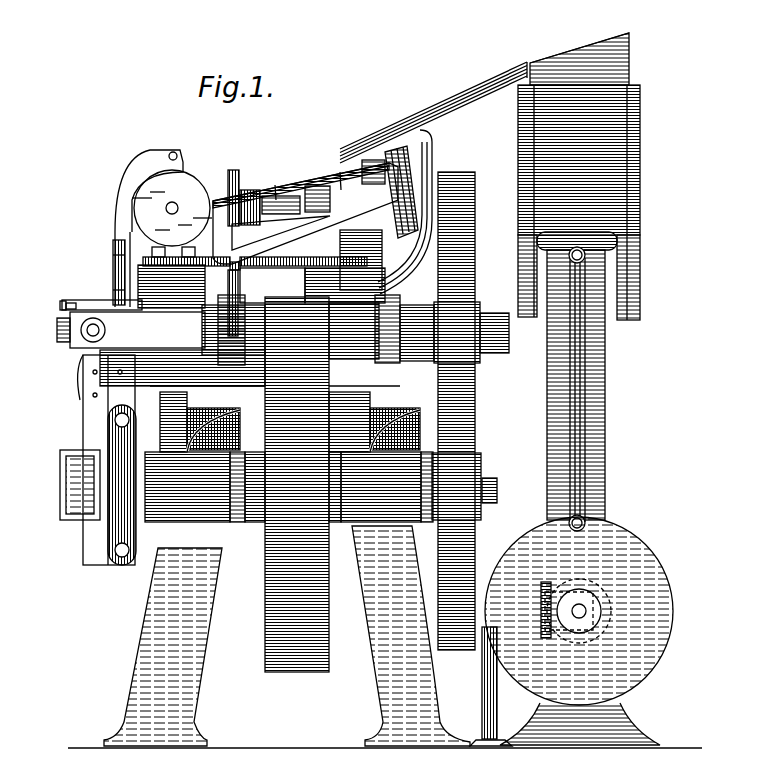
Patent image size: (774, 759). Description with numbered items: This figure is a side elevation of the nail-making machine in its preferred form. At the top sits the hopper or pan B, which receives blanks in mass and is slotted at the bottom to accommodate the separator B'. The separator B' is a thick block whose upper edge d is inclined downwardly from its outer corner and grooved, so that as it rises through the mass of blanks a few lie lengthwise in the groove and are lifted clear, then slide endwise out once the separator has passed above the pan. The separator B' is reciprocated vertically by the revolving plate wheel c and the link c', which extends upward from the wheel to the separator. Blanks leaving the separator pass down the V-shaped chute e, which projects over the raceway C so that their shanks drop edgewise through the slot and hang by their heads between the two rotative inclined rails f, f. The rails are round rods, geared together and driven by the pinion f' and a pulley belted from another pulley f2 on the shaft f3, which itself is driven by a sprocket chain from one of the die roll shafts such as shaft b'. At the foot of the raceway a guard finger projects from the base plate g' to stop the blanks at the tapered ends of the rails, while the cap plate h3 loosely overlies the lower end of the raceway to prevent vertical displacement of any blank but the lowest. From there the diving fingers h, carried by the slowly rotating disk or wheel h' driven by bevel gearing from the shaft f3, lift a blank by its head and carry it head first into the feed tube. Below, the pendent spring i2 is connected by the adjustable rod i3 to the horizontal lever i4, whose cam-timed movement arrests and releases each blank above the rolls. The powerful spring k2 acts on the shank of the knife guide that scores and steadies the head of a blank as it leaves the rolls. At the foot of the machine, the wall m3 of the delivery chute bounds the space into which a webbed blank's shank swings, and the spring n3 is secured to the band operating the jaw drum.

The hopper or pan B is at (589, 202).
The separator B' is at (579, 54).
The raceway C is at (305, 209).
The die roll shaft b' is at (355, 330).
The revolving plate wheel c is at (579, 631).
The link c' is at (590, 389).
The upper edge of separator d is at (557, 73).
The V-shaped chute e is at (433, 112).
The rotative inclined rail f is at (301, 185).
The pinion f' is at (404, 191).
The pulley f2 is at (400, 228).
The shaft f3 is at (305, 212).
The base plate g' is at (255, 286).
The diving fingers h is at (172, 211).
The disk or wheel h' is at (172, 213).
The cap plate h3 is at (238, 190).
The pendent spring i2 is at (115, 274).
The adjustable rod i3 is at (105, 304).
The horizontal lever i4 is at (70, 302).
The spring k2 is at (120, 255).
The wall of chute m3 is at (108, 432).
The spring n3 is at (62, 456).